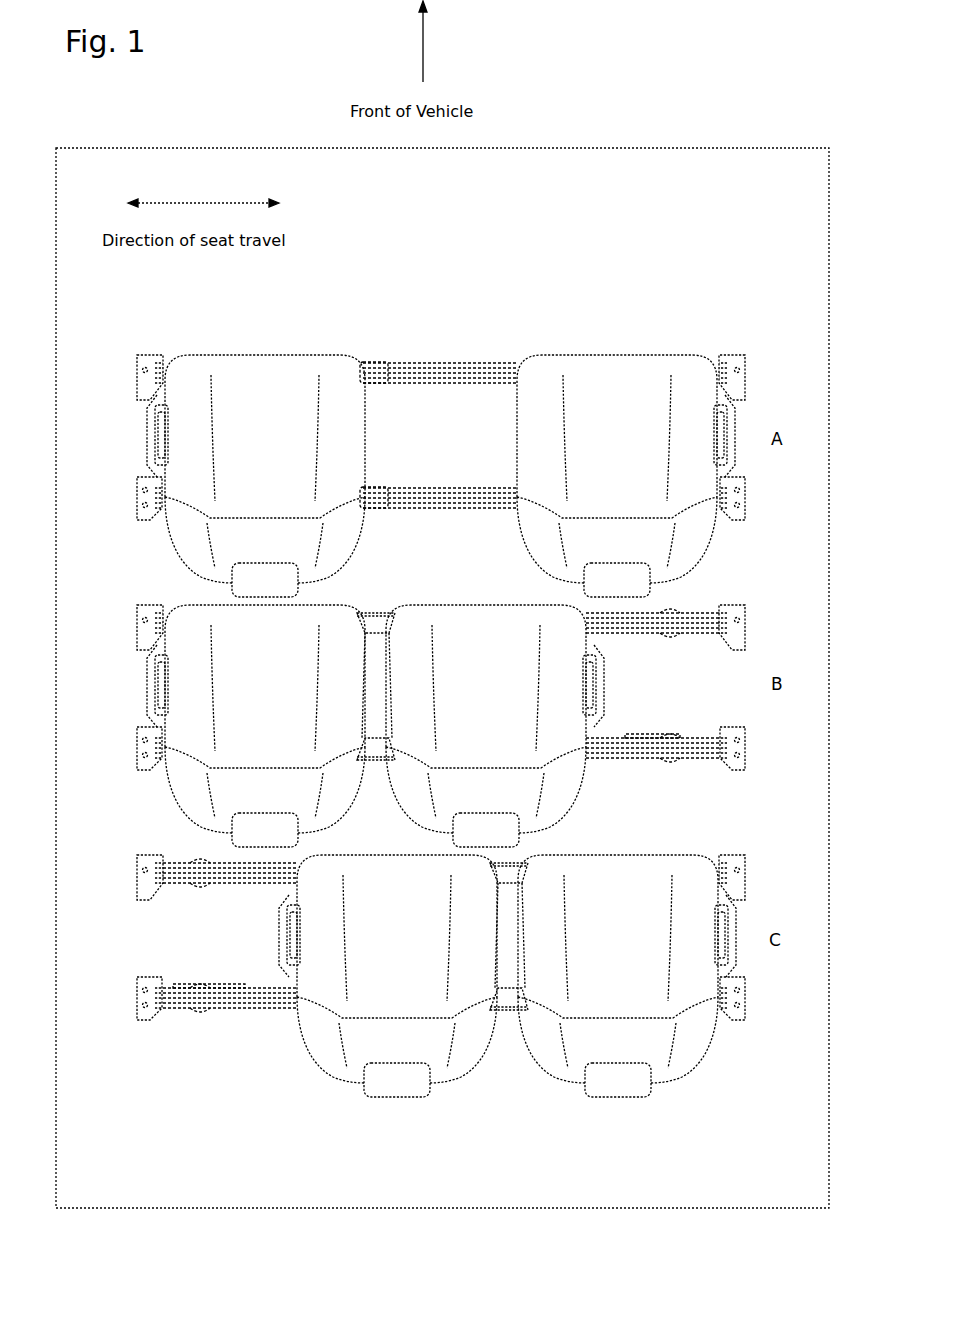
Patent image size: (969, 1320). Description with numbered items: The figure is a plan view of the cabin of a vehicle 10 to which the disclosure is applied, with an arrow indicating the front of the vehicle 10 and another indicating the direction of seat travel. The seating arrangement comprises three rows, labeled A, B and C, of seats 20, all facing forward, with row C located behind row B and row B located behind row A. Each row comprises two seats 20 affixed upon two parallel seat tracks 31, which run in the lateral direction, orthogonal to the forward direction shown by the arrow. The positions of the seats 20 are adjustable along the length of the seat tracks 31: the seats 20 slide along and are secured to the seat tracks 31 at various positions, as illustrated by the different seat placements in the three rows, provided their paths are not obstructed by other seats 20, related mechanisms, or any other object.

The vehicle 10 is at (766, 148).
The seat 20 is at (234, 352).
The seat track 31 is at (475, 486).